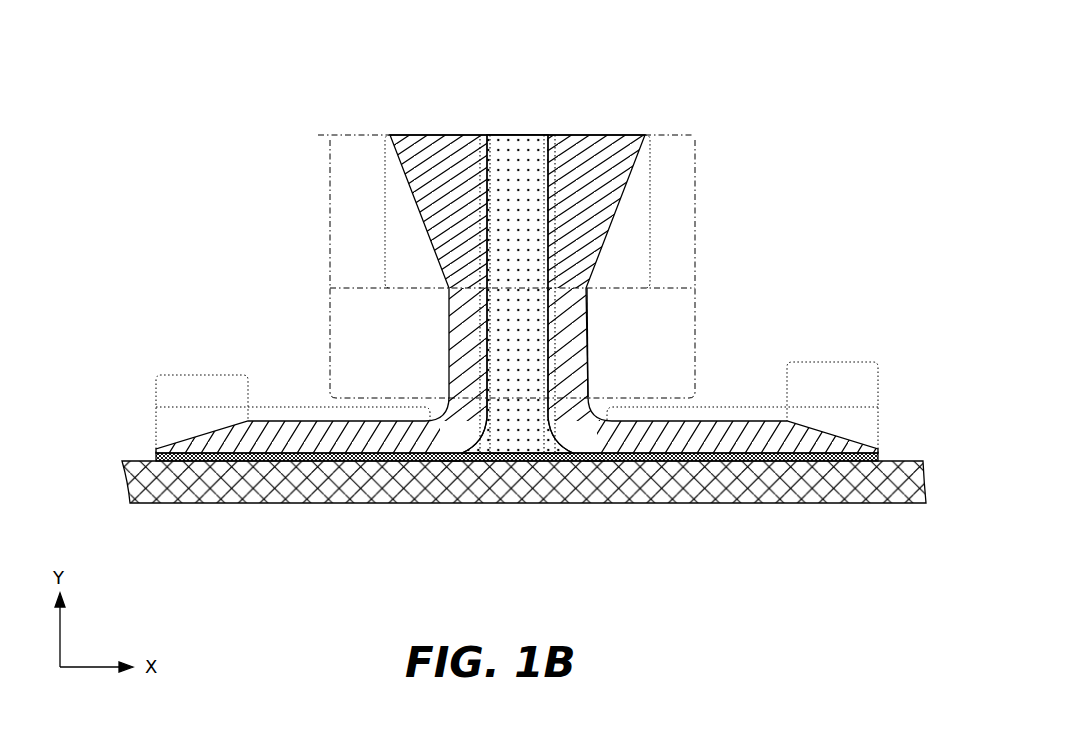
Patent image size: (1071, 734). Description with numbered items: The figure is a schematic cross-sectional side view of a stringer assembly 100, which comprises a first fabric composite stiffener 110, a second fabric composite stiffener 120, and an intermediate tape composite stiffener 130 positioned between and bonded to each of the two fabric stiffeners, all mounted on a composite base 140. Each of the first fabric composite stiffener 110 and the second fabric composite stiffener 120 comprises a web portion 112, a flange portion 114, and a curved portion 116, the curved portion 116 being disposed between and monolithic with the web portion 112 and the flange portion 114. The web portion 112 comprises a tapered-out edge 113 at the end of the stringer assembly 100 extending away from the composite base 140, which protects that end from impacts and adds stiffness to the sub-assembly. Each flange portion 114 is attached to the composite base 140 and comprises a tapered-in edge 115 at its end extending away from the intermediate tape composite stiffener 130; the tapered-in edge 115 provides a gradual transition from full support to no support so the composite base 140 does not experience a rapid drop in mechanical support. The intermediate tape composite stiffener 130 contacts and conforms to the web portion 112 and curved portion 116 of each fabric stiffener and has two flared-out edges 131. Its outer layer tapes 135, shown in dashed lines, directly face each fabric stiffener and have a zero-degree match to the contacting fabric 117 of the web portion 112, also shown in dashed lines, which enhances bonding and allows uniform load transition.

The stringer assembly 100 is at (618, 78).
The first fabric composite stiffener 110 is at (645, 135).
The web portion 112 is at (330, 256).
The tapered-out edge 113 is at (385, 221).
The flange portion 114 is at (300, 407).
The tapered-in edge 115 is at (210, 375).
The curved portion 116 is at (422, 468).
The contacting fabric 117 is at (552, 346).
The second fabric composite stiffener 120 is at (390, 135).
The intermediate tape composite stiffener 130 is at (508, 155).
The flared-out edges 131 is at (450, 470).
The outer layer tapes 135 is at (583, 145).
The composite base 140 is at (782, 500).